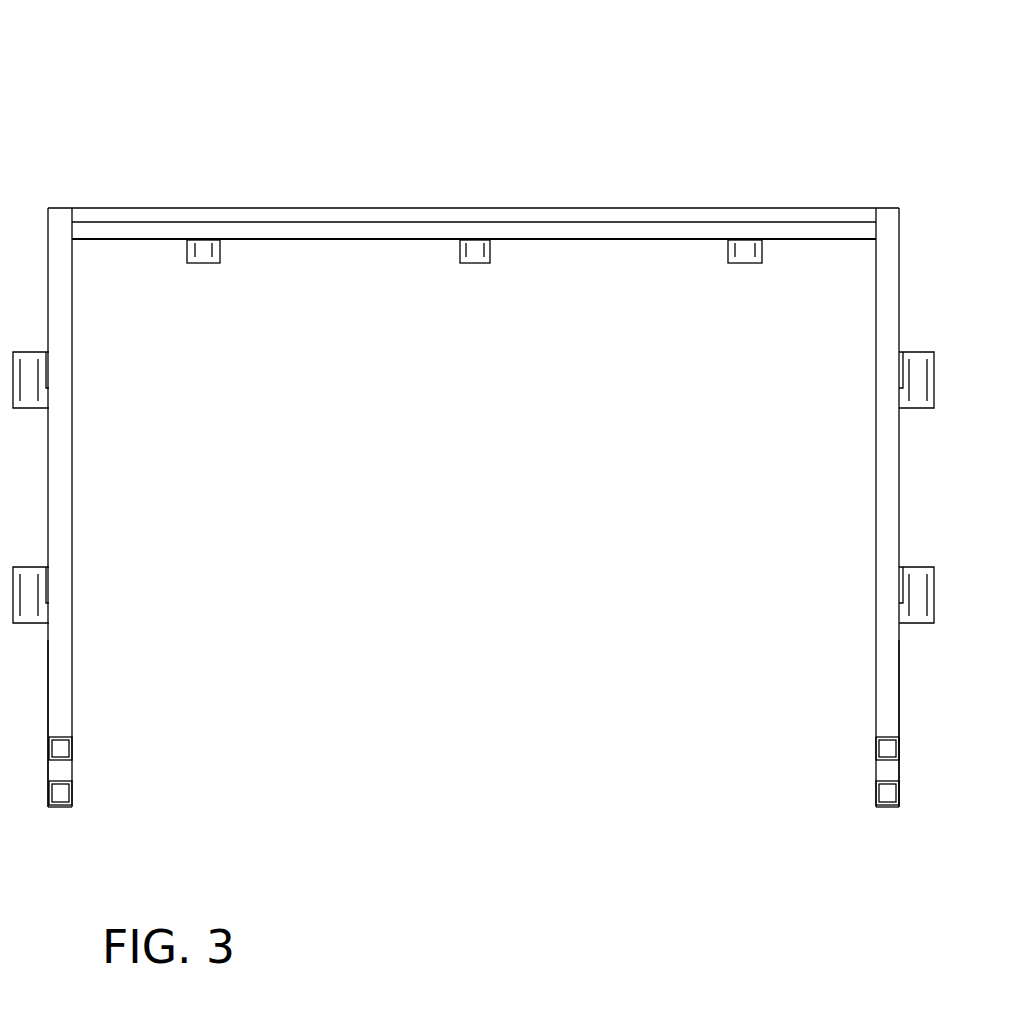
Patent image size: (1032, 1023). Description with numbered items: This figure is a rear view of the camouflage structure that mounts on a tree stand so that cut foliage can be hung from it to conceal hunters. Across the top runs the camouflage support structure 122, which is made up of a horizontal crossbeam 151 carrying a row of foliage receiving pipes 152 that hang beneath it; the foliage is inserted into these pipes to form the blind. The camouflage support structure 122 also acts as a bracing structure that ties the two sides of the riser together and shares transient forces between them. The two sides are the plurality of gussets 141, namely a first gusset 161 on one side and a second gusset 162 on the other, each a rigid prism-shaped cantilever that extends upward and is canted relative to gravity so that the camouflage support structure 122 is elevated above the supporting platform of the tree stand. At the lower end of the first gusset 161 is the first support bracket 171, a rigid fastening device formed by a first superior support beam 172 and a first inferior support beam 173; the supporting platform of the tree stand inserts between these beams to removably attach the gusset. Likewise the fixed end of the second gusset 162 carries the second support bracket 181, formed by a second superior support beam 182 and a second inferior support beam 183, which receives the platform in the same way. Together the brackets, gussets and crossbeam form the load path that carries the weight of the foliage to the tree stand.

The camouflage support structure 122 is at (474, 189).
The crossbeam 151 is at (662, 235).
The foliage receiving pipes 152 is at (745, 263).
The plurality of gussets 141 is at (755, 658).
The first gusset 161 is at (885, 670).
The second gusset 162 is at (63, 690).
The first support bracket 171 is at (780, 762).
The first superior support beam 172 is at (880, 749).
The first inferior support beam 173 is at (880, 787).
The second support bracket 181 is at (178, 762).
The second superior support beam 182 is at (63, 748).
The second inferior support beam 183 is at (63, 790).